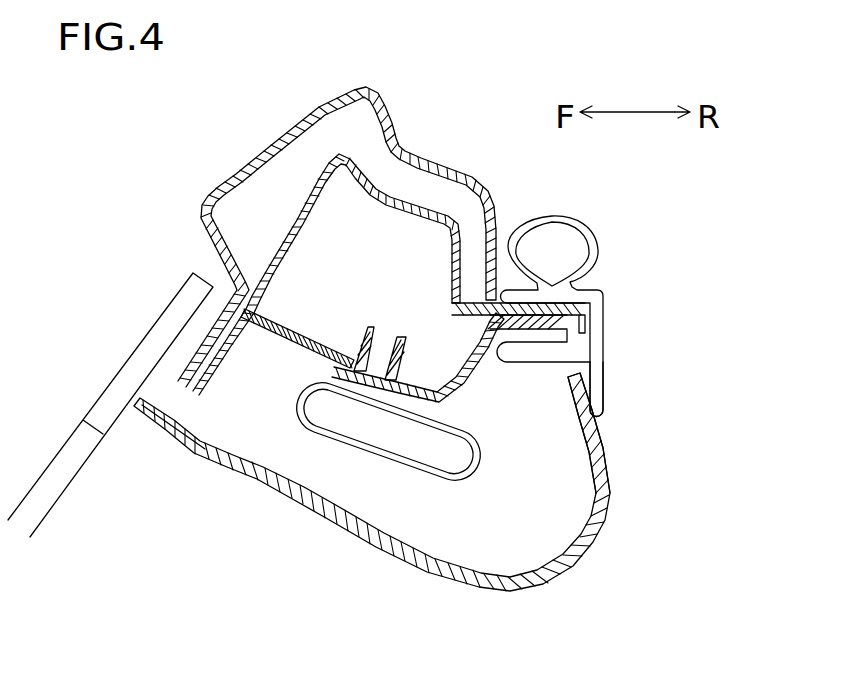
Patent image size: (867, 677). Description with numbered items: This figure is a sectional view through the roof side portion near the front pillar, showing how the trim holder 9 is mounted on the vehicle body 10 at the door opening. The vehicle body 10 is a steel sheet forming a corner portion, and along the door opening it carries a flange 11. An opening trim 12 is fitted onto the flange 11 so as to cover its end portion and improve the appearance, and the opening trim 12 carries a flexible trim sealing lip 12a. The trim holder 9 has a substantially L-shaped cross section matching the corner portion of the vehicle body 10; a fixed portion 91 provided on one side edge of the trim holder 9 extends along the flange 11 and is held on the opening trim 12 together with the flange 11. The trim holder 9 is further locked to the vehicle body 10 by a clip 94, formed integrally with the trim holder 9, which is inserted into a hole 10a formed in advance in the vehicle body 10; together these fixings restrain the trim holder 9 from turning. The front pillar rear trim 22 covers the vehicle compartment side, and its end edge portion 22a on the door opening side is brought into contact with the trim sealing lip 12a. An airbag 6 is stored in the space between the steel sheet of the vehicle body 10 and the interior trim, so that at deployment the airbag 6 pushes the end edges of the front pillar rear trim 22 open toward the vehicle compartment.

The airbag 6 is at (476, 470).
The trim holder 9 is at (483, 392).
The vehicle body 10 is at (280, 338).
The hole 10a is at (404, 370).
The flange 11 is at (557, 336).
The opening trim 12 is at (607, 304).
The trim sealing lip 12a is at (607, 392).
The front pillar rear trim 22 is at (383, 548).
The end edge portion 22a is at (600, 433).
The fixed portion 91 is at (560, 350).
The clip 94 is at (360, 332).